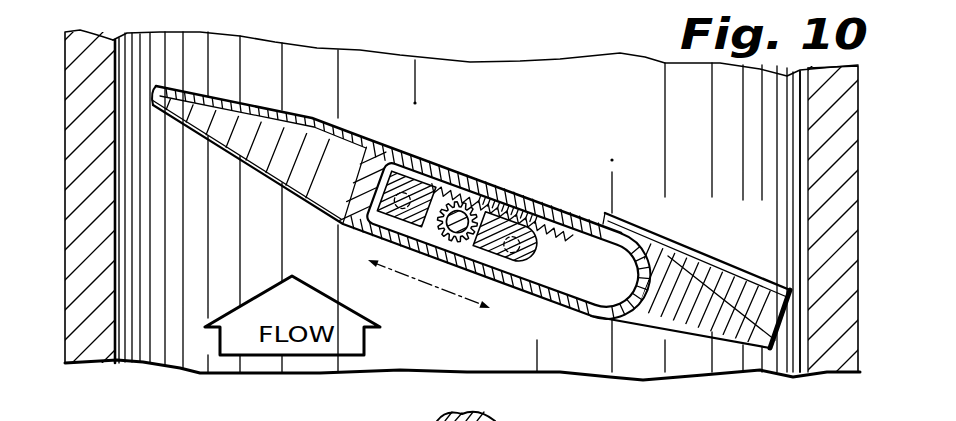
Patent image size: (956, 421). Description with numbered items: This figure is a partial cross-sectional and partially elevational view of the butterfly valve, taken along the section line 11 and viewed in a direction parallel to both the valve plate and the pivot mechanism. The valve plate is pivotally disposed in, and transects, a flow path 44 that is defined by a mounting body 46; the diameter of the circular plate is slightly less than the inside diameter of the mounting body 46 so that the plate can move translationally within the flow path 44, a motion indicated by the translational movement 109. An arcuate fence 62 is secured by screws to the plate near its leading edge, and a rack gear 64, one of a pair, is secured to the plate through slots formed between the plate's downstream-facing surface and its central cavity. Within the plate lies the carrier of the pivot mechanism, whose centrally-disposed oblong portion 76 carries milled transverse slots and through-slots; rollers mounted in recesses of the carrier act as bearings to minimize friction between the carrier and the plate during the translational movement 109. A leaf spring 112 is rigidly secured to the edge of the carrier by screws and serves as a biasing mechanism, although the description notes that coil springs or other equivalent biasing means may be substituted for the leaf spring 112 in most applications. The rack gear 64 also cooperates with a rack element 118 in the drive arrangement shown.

The section line 11- 11 is at (836, 218).
The flow path 44 is at (241, 240).
The mounting body 46 is at (88, 354).
The arcuate fence 62 is at (690, 246).
The rack gear 64 is at (535, 196).
The oblong portion 76 is at (407, 223).
The translational movement 109 is at (444, 252).
The leaf spring 112 is at (540, 297).
The rack 118 is at (480, 188).